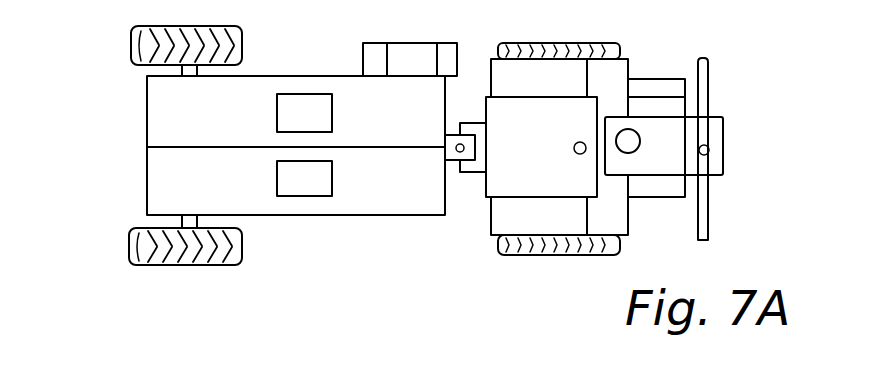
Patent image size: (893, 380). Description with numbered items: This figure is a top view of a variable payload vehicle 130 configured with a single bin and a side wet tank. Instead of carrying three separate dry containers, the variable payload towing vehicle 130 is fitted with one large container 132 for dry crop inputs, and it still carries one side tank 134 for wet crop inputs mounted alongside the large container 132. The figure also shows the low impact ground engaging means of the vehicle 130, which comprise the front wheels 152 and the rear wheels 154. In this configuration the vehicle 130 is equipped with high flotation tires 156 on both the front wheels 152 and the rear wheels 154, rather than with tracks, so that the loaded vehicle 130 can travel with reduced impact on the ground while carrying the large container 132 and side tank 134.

The variable payload vehicle 130 is at (384, 169).
The large container 132 is at (238, 87).
The side tank 134 is at (397, 43).
The front wheels 152 is at (517, 274).
The rear wheels 154 is at (284, 159).
The high flotation tires 156 is at (180, 26).